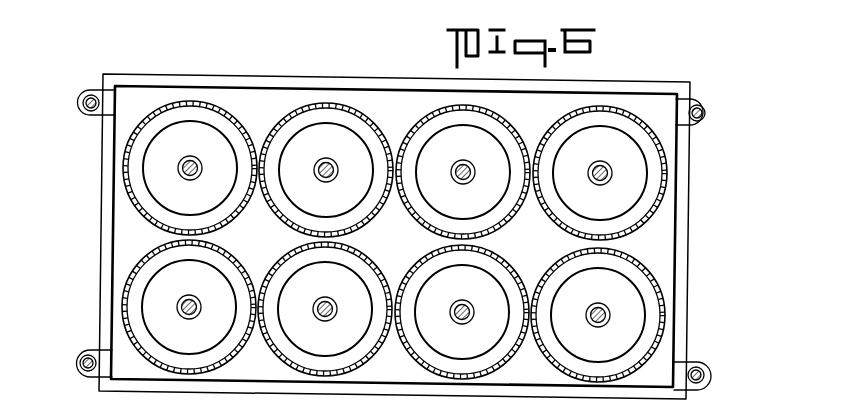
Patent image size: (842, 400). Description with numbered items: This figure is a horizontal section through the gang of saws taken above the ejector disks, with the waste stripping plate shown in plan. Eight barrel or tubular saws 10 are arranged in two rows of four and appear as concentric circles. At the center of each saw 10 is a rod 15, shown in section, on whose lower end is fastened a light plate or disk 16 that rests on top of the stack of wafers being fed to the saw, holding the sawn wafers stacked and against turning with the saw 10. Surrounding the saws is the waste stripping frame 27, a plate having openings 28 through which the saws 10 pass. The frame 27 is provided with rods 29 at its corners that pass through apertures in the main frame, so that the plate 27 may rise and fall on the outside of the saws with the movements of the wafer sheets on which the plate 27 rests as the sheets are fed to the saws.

The barrel or tubular saw 10 is at (217, 117).
The rod 15 is at (455, 163).
The plate or disk 16 is at (208, 203).
The waste stripping frame 27 is at (204, 80).
The openings 28 is at (645, 118).
The rods 29 is at (80, 113).